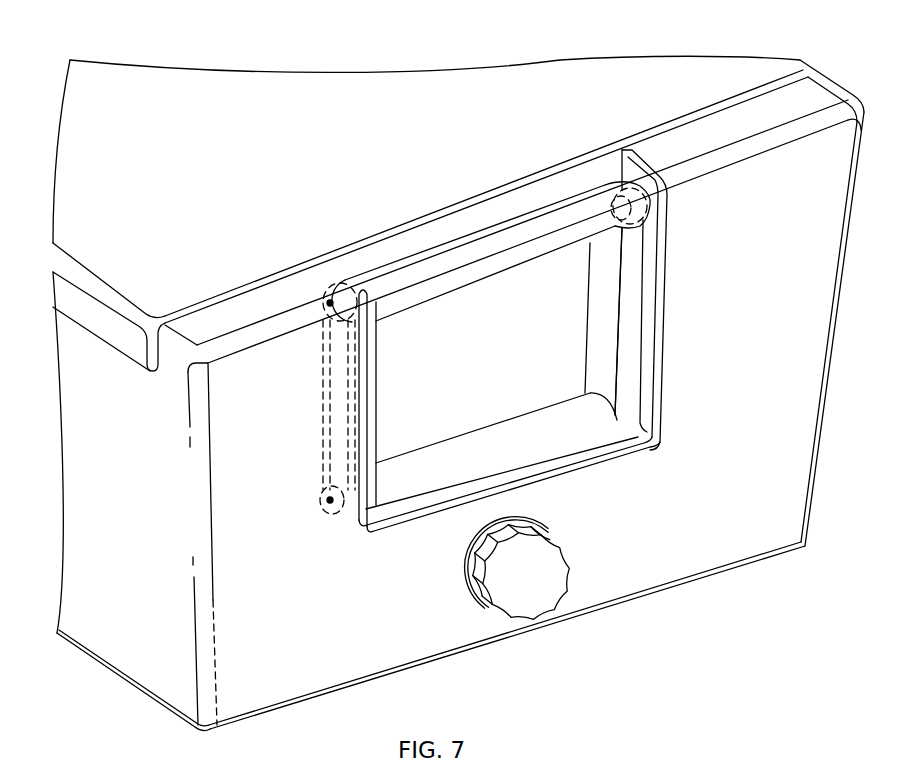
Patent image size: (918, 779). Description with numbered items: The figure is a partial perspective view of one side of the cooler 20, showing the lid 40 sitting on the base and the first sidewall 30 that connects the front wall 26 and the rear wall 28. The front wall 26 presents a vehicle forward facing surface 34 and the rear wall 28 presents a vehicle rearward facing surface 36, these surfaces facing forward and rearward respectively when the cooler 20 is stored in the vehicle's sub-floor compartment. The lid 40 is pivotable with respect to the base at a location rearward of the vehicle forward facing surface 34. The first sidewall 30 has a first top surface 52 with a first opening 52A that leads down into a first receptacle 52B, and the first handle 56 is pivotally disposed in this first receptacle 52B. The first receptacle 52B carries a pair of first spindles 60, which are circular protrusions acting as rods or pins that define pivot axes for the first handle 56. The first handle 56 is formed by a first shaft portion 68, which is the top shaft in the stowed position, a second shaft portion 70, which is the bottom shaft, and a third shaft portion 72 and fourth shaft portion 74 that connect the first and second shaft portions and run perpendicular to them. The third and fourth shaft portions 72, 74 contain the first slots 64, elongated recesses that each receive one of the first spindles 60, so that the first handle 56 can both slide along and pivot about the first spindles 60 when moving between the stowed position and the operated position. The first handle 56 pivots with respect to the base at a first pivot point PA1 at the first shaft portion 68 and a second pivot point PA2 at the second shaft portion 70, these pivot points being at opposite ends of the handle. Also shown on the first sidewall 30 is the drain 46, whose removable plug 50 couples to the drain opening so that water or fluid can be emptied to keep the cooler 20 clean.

The cooler 20 is at (603, 38).
The front wall 26 is at (807, 62).
The rear wall 28 is at (128, 432).
The first sidewall 30 is at (257, 462).
The vehicle forward facing surface 34 is at (836, 290).
The vehicle rearward facing surface 36 is at (108, 553).
The lid 40 is at (198, 302).
The drain 46 is at (574, 531).
The plug 50 is at (538, 572).
The first top surface 52 is at (720, 132).
The first opening 52A is at (622, 160).
The first receptacle 52B is at (435, 228).
The first handle 56 is at (508, 234).
The first spindle 60 is at (325, 290).
The first slot 64 is at (322, 392).
The first shaft portion 68 is at (473, 262).
The second shaft portion 70 is at (628, 328).
The third shaft portion 72 is at (372, 373).
The fourth shaft portion 74 is at (518, 440).
The first pivot point PA1 is at (326, 300).
The second pivot point PA2 is at (330, 508).